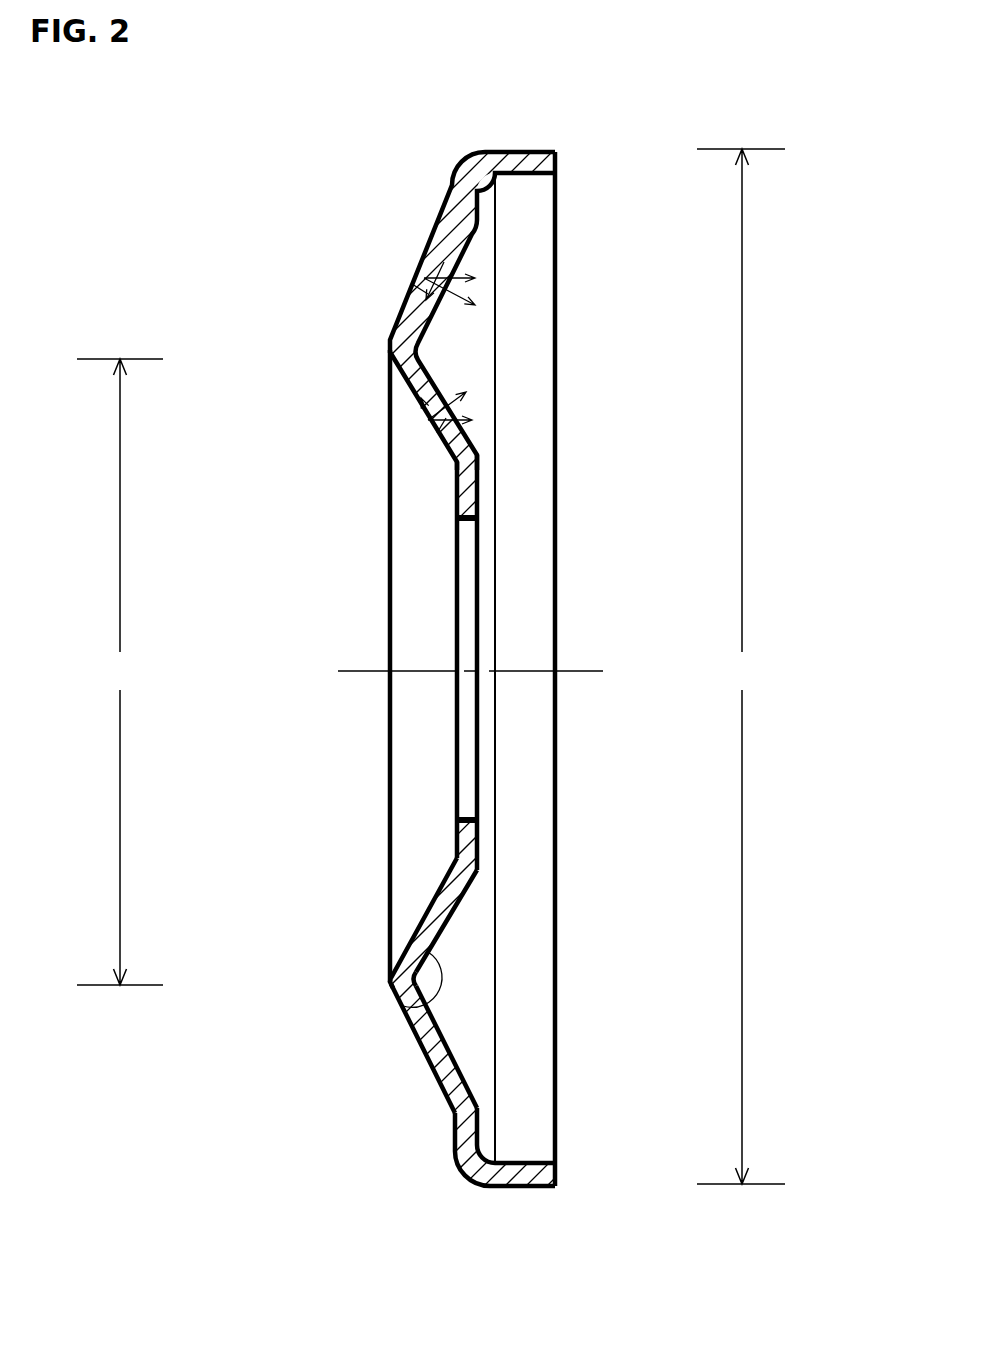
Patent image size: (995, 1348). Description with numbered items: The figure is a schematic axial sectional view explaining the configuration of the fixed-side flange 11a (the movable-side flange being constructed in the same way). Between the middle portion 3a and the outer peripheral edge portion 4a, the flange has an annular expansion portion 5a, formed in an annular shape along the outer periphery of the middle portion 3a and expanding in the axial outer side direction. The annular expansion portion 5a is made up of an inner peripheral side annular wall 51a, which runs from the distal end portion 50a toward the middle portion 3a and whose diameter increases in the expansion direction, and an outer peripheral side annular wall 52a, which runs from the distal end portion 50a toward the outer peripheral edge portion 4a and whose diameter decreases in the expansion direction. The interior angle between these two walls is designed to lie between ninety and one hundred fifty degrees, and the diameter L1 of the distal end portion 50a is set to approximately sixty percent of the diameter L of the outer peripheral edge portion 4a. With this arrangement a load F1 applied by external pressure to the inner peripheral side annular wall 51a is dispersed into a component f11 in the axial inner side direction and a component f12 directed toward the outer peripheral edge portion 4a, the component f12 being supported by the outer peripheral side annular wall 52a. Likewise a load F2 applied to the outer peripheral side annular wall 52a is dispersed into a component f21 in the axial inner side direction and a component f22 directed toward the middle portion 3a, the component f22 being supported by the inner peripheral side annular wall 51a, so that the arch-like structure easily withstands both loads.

The fixed-side flange 11a is at (470, 180).
The middle portion 3a is at (467, 753).
The outer peripheral edge portion 4a is at (517, 1188).
The annular expansion portion 5a is at (497, 674).
The inner peripheral side annular wall 51a is at (425, 912).
The distal end portion 50a is at (397, 984).
The outer peripheral side annular wall 52a is at (430, 1058).
The load F1 is at (453, 402).
The load F2 is at (452, 302).
The component in the axial inner side direction f11 is at (437, 433).
The component in the direction on the outer peripheral edge portion side f12 is at (419, 406).
The component in the axial inner side direction f21 is at (444, 262).
The component in the direction of the middle portion side f22 is at (425, 290).
The diameter of the outer peripheral edge portion L is at (741, 666).
The diameter of the distal end portion L1 is at (120, 672).